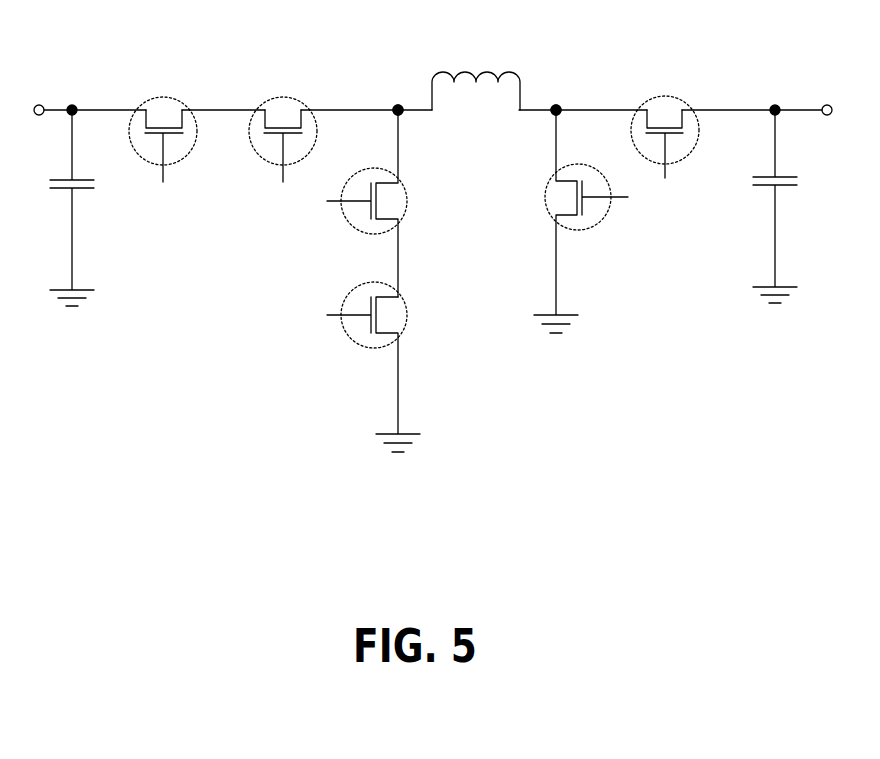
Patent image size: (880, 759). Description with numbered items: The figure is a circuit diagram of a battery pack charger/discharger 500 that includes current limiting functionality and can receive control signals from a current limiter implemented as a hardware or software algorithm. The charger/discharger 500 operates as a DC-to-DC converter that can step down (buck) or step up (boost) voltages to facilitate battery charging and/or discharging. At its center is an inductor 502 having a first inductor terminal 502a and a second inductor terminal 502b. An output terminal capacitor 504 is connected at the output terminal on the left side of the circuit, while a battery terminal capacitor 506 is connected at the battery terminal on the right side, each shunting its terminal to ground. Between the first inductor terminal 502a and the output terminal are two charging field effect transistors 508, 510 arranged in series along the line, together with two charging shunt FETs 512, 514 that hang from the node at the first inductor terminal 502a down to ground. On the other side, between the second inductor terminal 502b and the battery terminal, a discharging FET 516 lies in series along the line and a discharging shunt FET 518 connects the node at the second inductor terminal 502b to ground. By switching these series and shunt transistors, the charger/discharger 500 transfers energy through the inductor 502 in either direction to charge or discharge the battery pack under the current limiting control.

The battery pack charger/discharger 500 is at (431, 551).
The inductor 502 is at (507, 74).
The first inductor terminal 502a is at (427, 106).
The second inductor terminal 502b is at (533, 107).
The output terminal capacitor 504 is at (89, 211).
The battery terminal capacitor 506 is at (777, 208).
The charging field effect transistor 508 is at (155, 163).
The charging field effect transistor 510 is at (272, 166).
The charging shunt FET 512 is at (353, 228).
The charging shunt FET 514 is at (362, 348).
The discharging FET 516 is at (668, 97).
The discharging shunt FET 518 is at (597, 230).